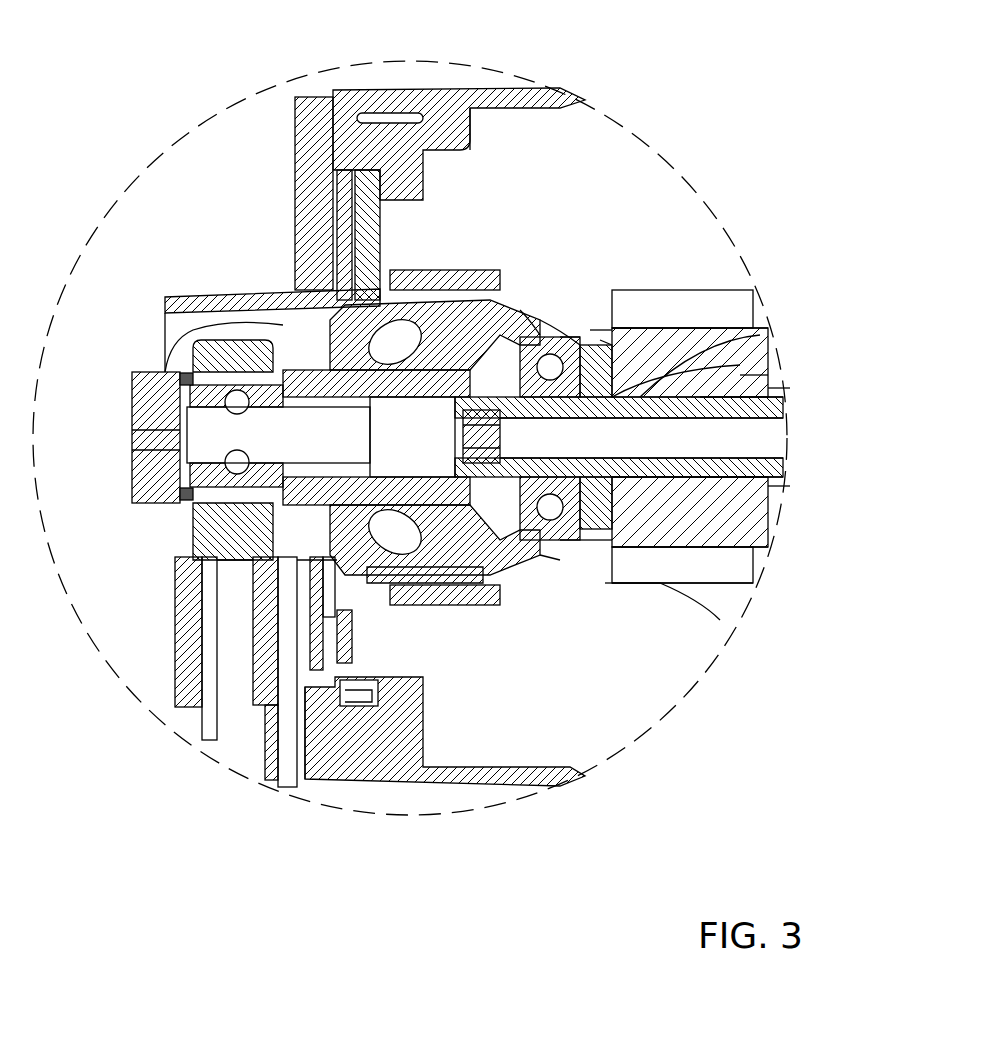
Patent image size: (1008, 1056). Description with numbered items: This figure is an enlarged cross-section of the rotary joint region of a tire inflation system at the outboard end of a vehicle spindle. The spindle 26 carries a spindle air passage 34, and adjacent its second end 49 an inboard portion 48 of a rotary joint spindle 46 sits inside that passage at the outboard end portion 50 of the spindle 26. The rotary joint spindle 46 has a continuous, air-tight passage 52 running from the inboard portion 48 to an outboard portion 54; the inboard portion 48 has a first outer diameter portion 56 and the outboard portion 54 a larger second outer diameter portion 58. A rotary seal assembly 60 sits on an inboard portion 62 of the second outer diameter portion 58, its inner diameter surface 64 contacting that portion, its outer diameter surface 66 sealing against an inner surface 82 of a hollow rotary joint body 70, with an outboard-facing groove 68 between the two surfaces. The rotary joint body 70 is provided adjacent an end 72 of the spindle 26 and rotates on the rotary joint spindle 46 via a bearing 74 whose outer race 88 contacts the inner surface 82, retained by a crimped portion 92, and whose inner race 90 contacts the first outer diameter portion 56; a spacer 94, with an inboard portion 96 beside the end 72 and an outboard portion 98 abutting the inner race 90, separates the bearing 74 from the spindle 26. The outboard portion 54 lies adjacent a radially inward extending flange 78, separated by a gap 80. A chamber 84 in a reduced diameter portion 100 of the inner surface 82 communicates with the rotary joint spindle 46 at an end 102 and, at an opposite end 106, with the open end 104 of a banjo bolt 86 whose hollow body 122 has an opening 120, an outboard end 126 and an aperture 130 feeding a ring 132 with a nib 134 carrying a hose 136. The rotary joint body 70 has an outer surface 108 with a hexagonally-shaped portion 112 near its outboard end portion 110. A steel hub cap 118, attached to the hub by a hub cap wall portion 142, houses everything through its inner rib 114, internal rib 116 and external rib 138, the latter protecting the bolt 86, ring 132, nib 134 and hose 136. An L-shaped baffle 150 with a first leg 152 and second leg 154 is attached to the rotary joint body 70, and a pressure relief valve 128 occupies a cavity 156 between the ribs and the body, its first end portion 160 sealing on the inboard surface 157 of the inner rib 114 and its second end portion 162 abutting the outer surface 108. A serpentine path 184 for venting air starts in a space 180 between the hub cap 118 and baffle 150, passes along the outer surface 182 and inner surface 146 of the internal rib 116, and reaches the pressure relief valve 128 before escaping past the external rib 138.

The spindle 26 is at (745, 292).
The spindle air passage 34 is at (772, 396).
The rotary joint spindle 46 is at (770, 428).
The inboard portion 48 is at (720, 497).
The second end 49 is at (762, 375).
The outboard end portion 50 is at (700, 592).
The air passage 52 is at (778, 448).
The outboard portion 54 is at (672, 348).
The first outer diameter portion 56 is at (720, 540).
The second outer diameter portion 58 is at (520, 397).
The rotary seal assembly 60 is at (590, 560).
The inboard portion 62 is at (620, 580).
The inner diameter surface 64 is at (635, 585).
The outer diameter surface 66 is at (550, 548).
The groove 68 is at (565, 555).
The rotary joint body 70 is at (605, 335).
The end 72 is at (650, 328).
The bearing 74 is at (700, 552).
The radially inward extending flange 78 is at (628, 312).
The gap 80 is at (660, 340).
The inner surface 82 is at (603, 290).
The chamber 84 is at (412, 437).
The bolt 86 is at (134, 455).
The outer race 88 is at (650, 590).
The inner race 90 is at (700, 478).
The crimped portion 92 is at (700, 584).
The spacer 94 is at (715, 328).
The inboard portion 96 is at (700, 368).
The outboard portion 98 is at (700, 350).
The reduced diameter portion 100 is at (330, 322).
The end 102 is at (345, 235).
The open end 104 is at (200, 480).
The opposite end 106 is at (200, 500).
The outer surface 108 is at (300, 545).
The outboard end portion 110 is at (230, 530).
The hexagonally-shaped portion 112 is at (215, 572).
The inner rib 114 is at (340, 365).
The internal rib 116 is at (400, 288).
The hub cap 118 is at (300, 183).
The opening 120 is at (175, 440).
The hollow body 122 is at (200, 398).
The outboard end 126 is at (134, 476).
The pressure relief valve 128 is at (448, 303).
The aperture 130 is at (195, 372).
The ring 132 is at (200, 350).
The nib 134 is at (213, 592).
The hose 136 is at (200, 622).
The external rib 138 is at (168, 297).
The hub cap wall portion 142 is at (500, 86).
The inner surface 146 is at (455, 770).
The baffle 150 is at (528, 318).
The first leg 152 is at (440, 272).
The second leg 154 is at (570, 337).
The cavity 156 is at (385, 548).
The inboard surface 157 is at (352, 265).
The first end portion 160 is at (255, 562).
The second end portion 162 is at (398, 706).
The space 180 is at (378, 690).
The outer surface 182 is at (480, 585).
The serpentine path 184 is at (505, 560).